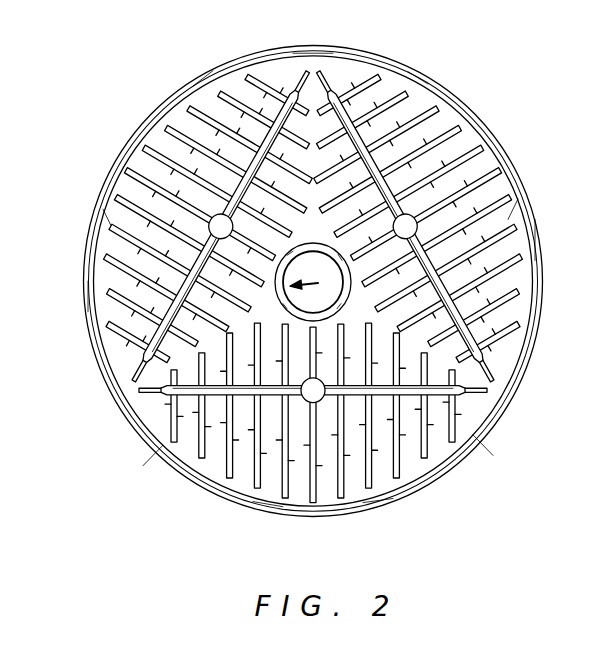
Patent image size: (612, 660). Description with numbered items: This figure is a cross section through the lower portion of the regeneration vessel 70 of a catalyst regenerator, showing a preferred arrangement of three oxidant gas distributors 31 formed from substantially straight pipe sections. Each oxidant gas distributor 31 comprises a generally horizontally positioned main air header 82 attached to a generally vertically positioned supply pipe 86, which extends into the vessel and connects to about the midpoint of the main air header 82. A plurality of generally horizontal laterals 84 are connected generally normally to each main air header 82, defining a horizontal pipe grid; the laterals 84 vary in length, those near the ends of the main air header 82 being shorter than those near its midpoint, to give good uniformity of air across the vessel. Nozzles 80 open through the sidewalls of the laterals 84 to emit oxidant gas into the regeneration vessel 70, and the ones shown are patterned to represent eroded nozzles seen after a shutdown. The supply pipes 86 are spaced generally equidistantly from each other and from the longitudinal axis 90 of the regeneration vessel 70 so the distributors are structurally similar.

The regeneration vessel 70 is at (536, 214).
The laterals 84 is at (505, 160).
The nozzles 80 is at (313, 255).
The main air header 82 is at (291, 86).
The supply pipe 86 is at (211, 227).
The longitudinal axis 90 is at (279, 289).
The oxidant gas distributor 31 is at (297, 255).